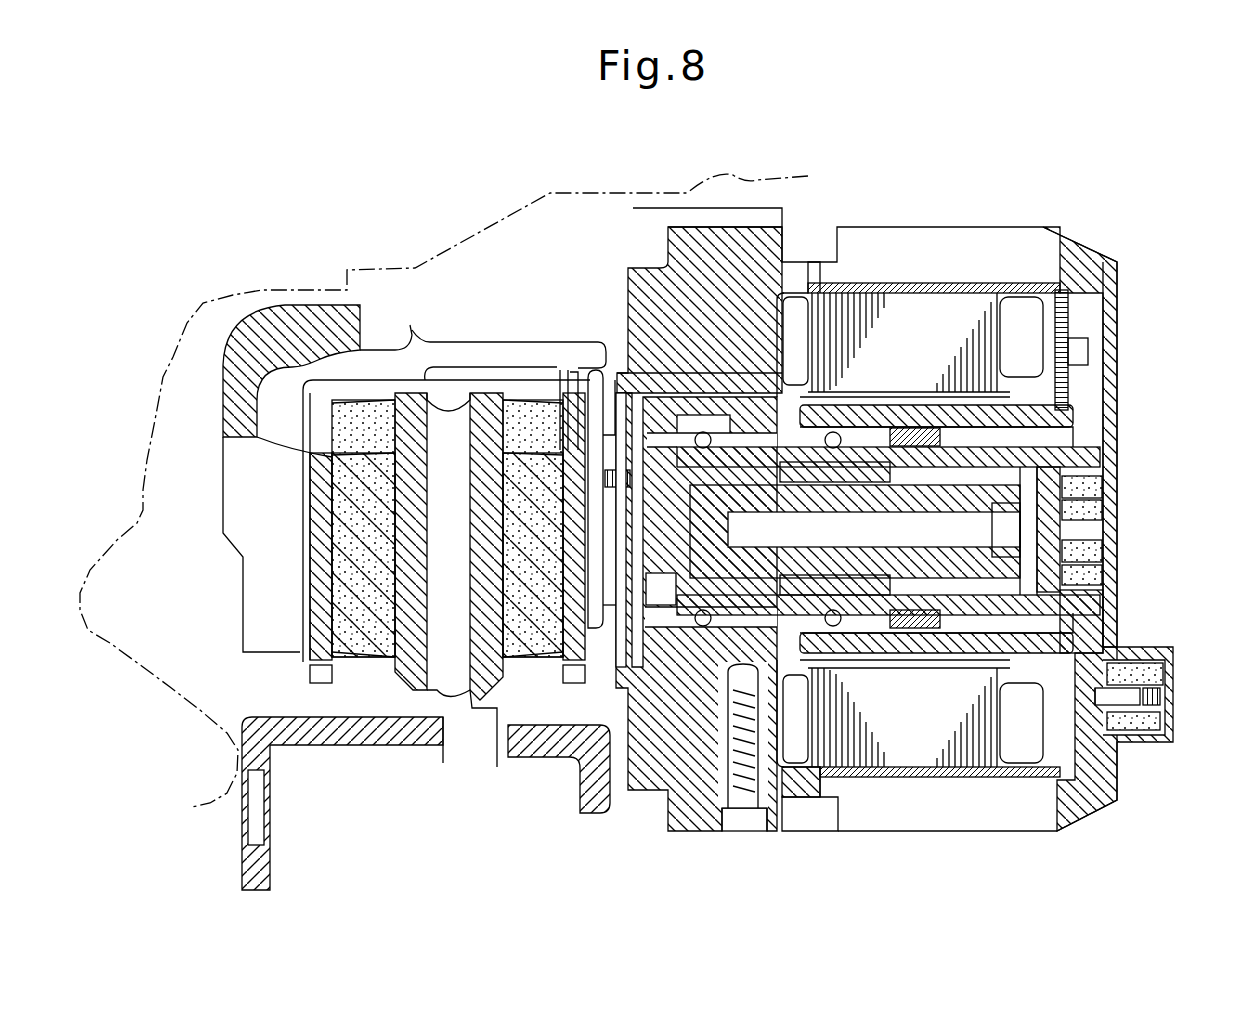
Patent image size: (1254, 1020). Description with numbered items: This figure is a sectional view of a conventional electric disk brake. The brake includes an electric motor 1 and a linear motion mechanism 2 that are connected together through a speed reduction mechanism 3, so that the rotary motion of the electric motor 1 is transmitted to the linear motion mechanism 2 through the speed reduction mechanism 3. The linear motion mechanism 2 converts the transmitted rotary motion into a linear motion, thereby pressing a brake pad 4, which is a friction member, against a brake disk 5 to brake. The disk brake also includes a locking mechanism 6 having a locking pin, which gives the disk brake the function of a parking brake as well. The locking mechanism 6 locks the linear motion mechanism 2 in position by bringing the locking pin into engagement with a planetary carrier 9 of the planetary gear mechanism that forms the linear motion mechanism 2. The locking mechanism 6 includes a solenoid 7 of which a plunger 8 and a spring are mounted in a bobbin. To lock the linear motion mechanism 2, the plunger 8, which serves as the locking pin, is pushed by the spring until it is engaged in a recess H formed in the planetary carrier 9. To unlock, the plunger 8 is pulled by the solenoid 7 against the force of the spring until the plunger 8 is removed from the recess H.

The electric motor 1 is at (940, 332).
The linear motion mechanism 2 is at (688, 512).
The speed reduction mechanism 3 is at (945, 528).
The brake pad 4 is at (541, 635).
The brake disk 5 is at (483, 682).
The locking mechanism 6 is at (1107, 734).
The solenoid 7 is at (1148, 727).
The plunger 8 is at (1125, 690).
The planetary carrier 9 is at (1090, 385).
The recess H is at (1095, 705).